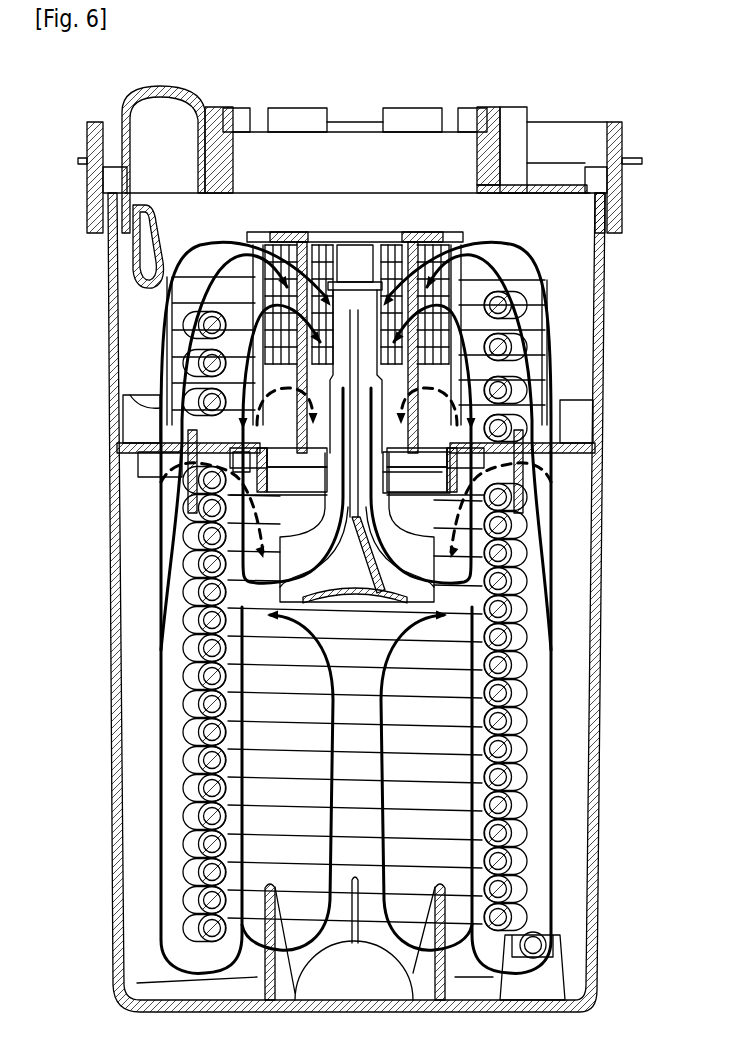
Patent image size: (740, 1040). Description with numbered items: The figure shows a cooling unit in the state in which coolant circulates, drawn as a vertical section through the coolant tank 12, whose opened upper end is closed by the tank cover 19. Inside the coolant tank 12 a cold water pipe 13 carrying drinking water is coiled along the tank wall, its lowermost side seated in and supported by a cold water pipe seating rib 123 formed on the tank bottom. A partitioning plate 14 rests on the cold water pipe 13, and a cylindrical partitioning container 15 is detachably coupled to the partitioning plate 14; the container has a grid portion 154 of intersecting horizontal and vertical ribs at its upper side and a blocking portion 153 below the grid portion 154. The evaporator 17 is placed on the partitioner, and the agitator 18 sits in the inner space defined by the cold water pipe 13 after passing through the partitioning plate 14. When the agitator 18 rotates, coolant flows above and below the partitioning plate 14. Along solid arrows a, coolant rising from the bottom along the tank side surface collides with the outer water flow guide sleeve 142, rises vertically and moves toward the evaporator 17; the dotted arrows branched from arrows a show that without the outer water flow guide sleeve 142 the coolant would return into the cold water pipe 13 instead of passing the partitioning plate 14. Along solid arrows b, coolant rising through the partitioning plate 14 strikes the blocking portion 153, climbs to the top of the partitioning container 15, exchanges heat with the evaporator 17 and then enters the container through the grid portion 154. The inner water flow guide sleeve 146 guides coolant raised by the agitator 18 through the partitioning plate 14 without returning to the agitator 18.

The coolant tank 12 is at (595, 742).
The cold water pipe 13 is at (503, 833).
The partitioning plate 14 is at (587, 455).
The partitioning container 15 is at (355, 237).
The evaporator 17 is at (523, 300).
The agitator 18 is at (425, 570).
The tank cover 19 is at (594, 125).
The cold water pipe seating rib 123 is at (557, 965).
The outer water flow guide sleeve 142 is at (192, 502).
The inner water flow guide sleeve 146 is at (190, 550).
The blocking portion 153 is at (450, 383).
The grid portion 154 is at (467, 333).
The solid arrows a is at (163, 335).
The solid arrows b is at (122, 400).